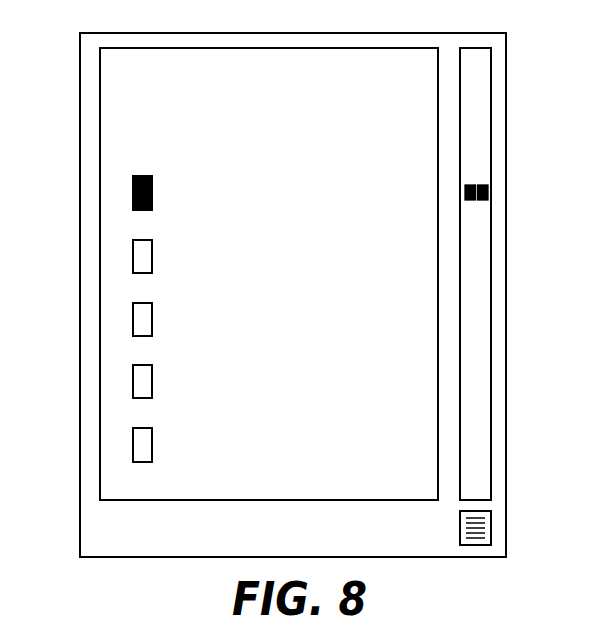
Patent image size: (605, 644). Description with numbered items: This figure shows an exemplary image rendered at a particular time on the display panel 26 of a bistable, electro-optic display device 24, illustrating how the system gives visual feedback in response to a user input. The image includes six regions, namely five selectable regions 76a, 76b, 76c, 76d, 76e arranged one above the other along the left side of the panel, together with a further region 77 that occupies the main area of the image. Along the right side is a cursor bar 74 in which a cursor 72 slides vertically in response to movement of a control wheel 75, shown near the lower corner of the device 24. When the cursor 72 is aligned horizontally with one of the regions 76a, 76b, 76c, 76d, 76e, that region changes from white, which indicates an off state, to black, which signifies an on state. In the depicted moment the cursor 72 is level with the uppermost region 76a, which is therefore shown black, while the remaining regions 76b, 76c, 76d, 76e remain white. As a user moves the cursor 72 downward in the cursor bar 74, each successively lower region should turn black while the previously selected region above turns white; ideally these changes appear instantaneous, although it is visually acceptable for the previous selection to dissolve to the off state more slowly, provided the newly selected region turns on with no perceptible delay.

The electro-optic display device 24 is at (508, 489).
The display panel 26 is at (200, 490).
The cursor 72 is at (488, 185).
The cursor bar 74 is at (478, 62).
The control wheel 75 is at (488, 545).
The region 76a is at (133, 200).
The region 76b is at (135, 266).
The region 76c is at (135, 330).
The region 76d is at (135, 392).
The region 76e is at (135, 454).
The region 77 is at (115, 72).